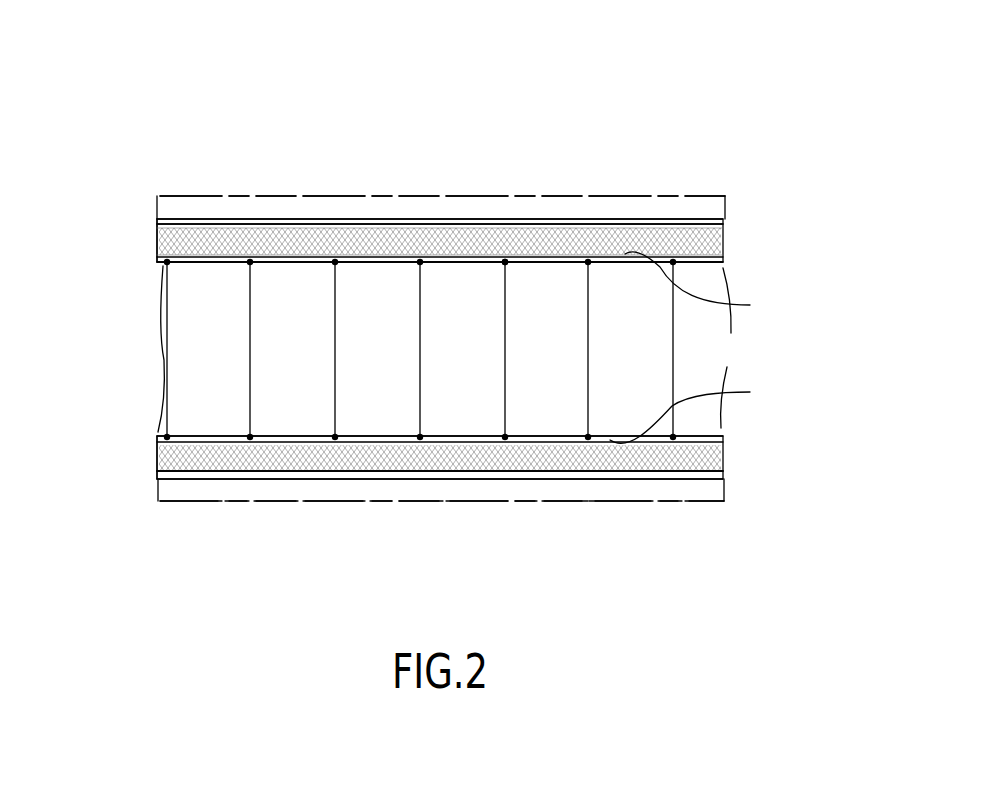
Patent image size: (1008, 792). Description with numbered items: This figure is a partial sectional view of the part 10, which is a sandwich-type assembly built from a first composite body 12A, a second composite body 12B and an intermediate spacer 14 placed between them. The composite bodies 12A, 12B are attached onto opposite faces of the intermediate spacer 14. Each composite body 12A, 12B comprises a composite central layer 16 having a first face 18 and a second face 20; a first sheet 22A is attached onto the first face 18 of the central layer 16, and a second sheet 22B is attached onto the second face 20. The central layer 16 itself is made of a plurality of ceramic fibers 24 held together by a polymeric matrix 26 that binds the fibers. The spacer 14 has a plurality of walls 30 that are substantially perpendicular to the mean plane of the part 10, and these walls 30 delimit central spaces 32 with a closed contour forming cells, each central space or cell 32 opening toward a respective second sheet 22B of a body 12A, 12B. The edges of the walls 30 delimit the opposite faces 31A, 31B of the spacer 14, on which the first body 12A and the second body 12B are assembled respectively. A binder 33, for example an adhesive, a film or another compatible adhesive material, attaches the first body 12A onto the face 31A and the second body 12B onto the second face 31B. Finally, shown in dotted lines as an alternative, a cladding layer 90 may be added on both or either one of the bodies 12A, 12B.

The part 10 is at (693, 120).
The first composite body 12A is at (738, 240).
The second composite body 12B is at (738, 465).
The intermediate spacer 14 is at (708, 349).
The composite central layer 16 is at (155, 240).
The first face 18 is at (218, 228).
The second face 20 is at (272, 263).
The first sheet 22A is at (427, 221).
The second sheet 22B is at (423, 267).
The ceramic fibers 24 is at (337, 237).
The polymeric matrix 26 is at (270, 245).
The walls 30 is at (248, 334).
The first face of the spacer 31A is at (712, 285).
The second face of the spacer 31B is at (704, 413).
The central space 32 is at (188, 348).
The binder 33 is at (506, 262).
The cladding layer 90 is at (470, 210).